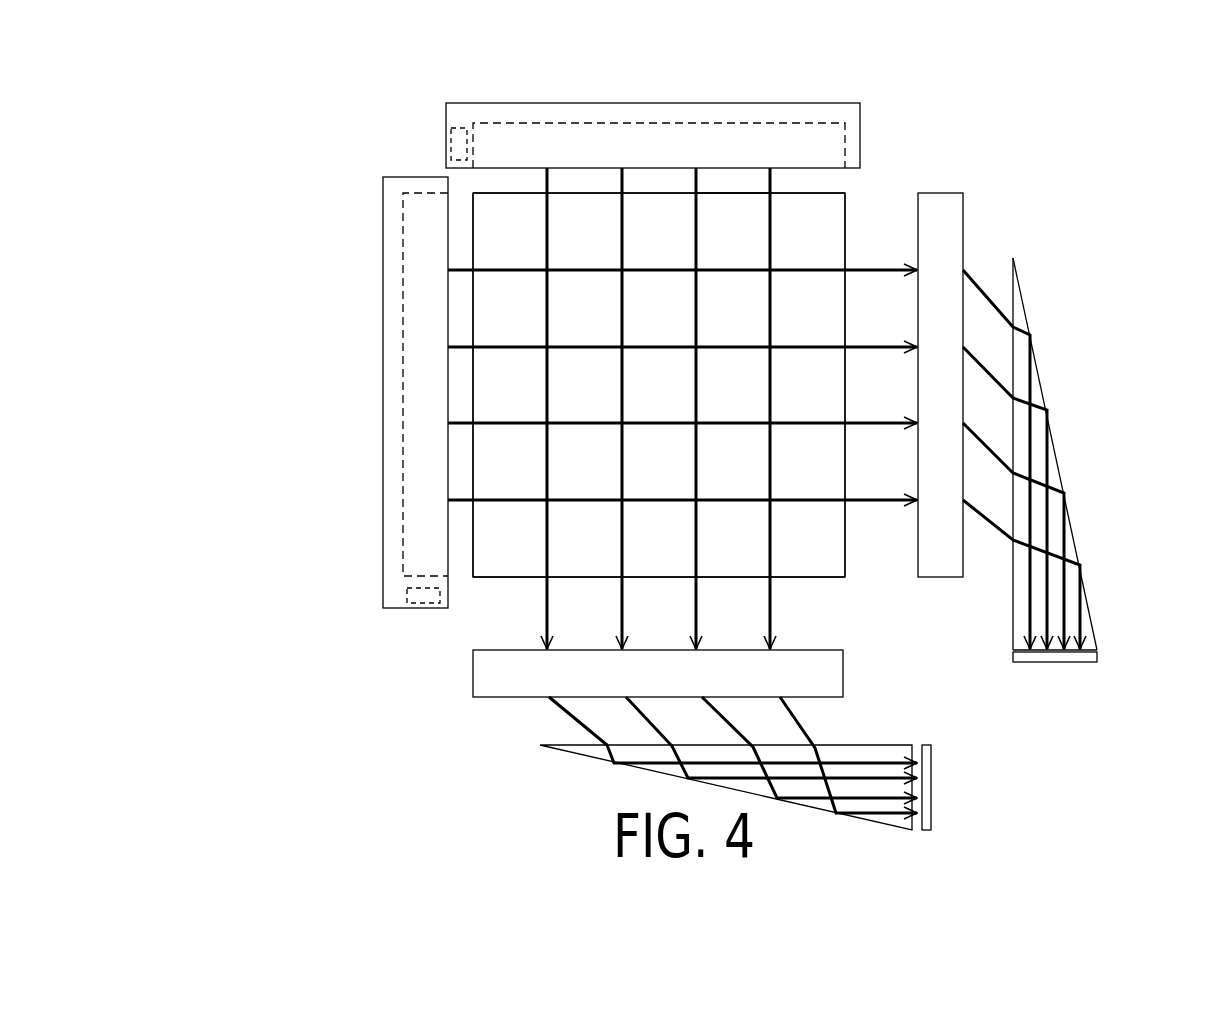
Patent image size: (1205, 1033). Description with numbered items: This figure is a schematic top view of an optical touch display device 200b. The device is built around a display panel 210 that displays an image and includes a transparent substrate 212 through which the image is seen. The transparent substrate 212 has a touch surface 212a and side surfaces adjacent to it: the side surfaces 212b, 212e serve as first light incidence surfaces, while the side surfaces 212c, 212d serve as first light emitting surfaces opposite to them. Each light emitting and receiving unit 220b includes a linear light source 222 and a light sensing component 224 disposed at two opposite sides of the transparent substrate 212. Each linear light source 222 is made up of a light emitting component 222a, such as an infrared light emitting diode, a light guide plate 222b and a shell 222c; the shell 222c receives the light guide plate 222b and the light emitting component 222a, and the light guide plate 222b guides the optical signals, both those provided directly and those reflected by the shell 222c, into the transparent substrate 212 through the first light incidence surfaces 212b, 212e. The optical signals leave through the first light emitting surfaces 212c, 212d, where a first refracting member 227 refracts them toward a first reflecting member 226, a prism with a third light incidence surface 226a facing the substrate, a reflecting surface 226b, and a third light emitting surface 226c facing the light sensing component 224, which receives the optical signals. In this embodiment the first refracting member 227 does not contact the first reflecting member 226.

The optical touch display device 200b is at (1013, 786).
The display panel 210 is at (729, 361).
The transparent substrate 212 is at (837, 202).
The touch surface 212a is at (809, 233).
The first light incidence surface 212b is at (472, 462).
The first light emitting surface 212c is at (803, 580).
The first light emitting surface 212d is at (848, 509).
The first light incidence surface 212e is at (733, 191).
The light emitting and receiving unit 220b is at (701, 452).
The linear light source 222 is at (326, 394).
The light emitting component 222a is at (407, 593).
The light guide plate 222b is at (403, 558).
The shell 222c is at (383, 517).
The light sensing component 224 is at (1077, 663).
The first reflecting member 226 is at (1080, 454).
The third light incidence surface 226a is at (1017, 448).
The reflecting surface 226b is at (1065, 482).
The third light emitting surface 226c is at (1090, 639).
The first refracting member 227 is at (950, 214).